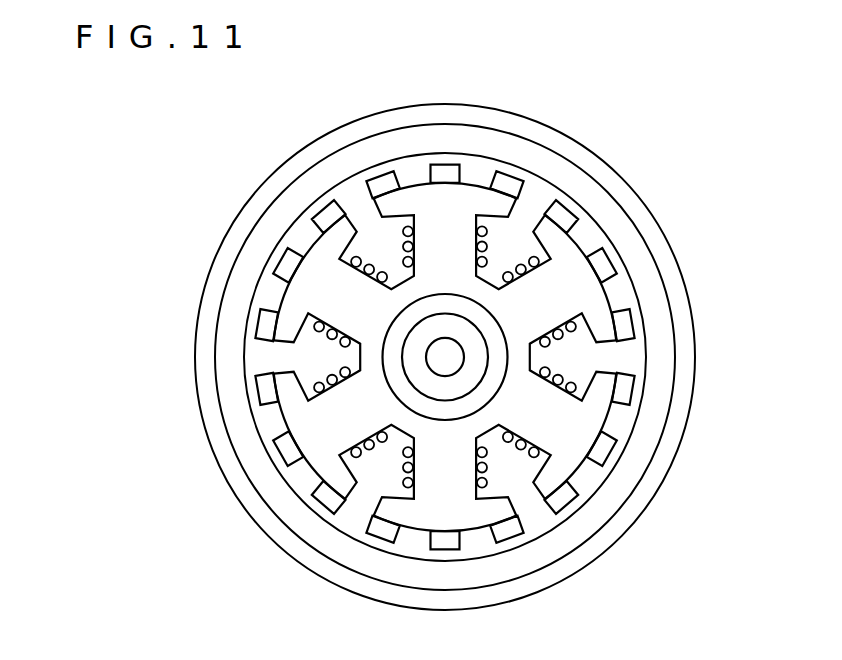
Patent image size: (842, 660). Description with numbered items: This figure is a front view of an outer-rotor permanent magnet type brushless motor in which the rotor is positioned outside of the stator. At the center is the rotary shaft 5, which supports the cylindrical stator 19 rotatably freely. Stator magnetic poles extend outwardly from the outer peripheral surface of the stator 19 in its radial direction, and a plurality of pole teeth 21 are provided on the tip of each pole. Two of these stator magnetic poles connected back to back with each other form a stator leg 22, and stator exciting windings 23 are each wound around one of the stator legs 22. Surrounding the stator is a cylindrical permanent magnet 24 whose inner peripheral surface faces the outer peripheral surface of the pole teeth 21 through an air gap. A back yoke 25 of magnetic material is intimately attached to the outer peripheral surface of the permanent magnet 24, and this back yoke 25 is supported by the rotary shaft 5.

The rotary shaft 5 is at (440, 357).
The cylindrical stator 19 is at (465, 410).
The pole teeth 21 is at (632, 388).
The stator leg 22 is at (463, 203).
The stator exciting windings 23 is at (556, 373).
The cylindrical permanent magnet 24 is at (632, 243).
The back yoke 25 is at (583, 148).